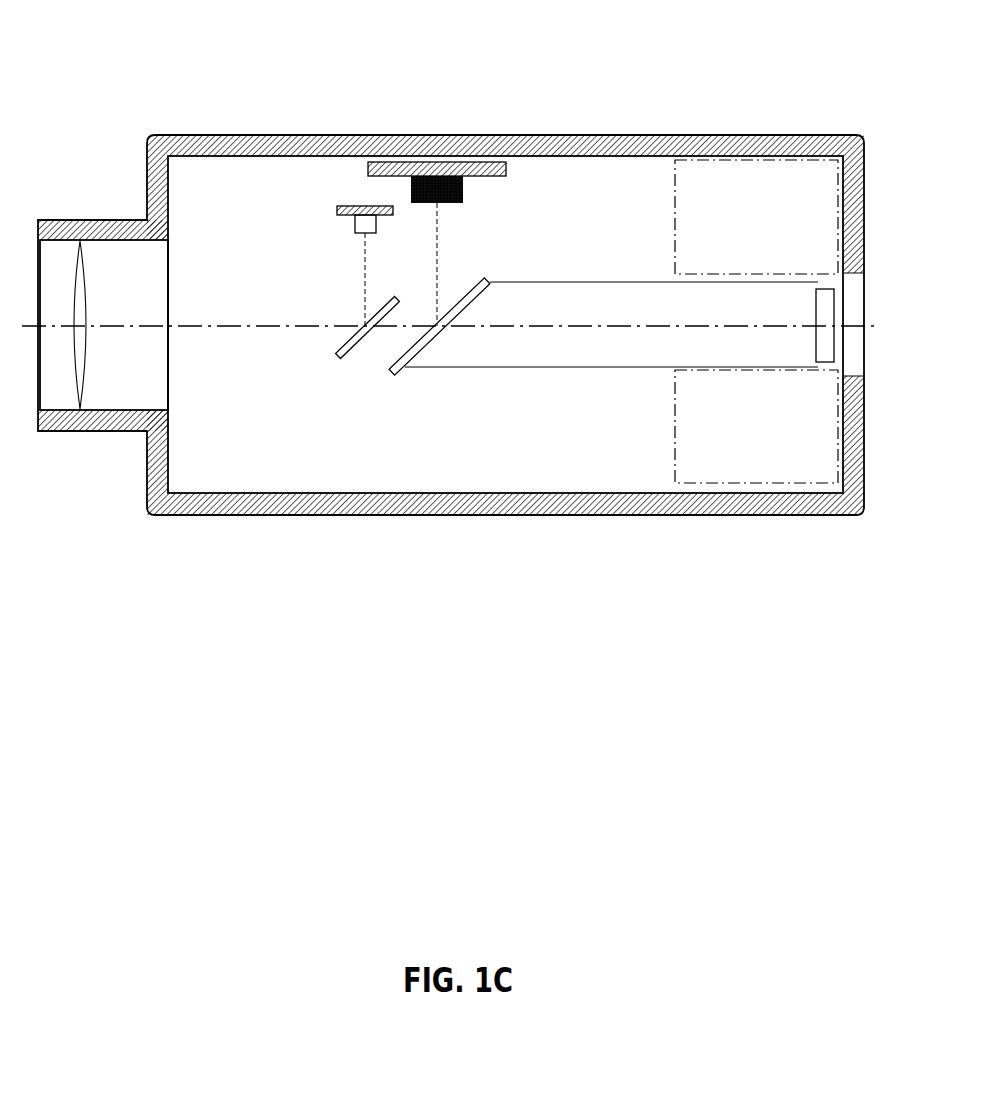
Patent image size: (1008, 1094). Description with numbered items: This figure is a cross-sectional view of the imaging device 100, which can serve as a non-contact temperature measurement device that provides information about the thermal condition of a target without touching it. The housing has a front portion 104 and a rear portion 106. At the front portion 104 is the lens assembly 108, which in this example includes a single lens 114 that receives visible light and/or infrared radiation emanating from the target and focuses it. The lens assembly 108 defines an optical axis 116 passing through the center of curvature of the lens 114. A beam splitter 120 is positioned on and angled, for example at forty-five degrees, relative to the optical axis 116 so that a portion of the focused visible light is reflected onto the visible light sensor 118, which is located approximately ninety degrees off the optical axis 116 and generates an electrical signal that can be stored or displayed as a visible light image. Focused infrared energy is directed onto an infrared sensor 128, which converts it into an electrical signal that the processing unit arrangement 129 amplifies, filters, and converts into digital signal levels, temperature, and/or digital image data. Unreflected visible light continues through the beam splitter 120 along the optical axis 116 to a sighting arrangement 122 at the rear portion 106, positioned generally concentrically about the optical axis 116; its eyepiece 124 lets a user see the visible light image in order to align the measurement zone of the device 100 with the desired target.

The imaging device 100 is at (549, 81).
The front portion 104 is at (227, 128).
The rear portion 106 is at (699, 127).
The lens assembly 108 is at (109, 436).
The lens 114 is at (70, 298).
The optical axis 116 is at (261, 325).
The visible light sensor 118 is at (437, 190).
The beam splitter 120 is at (346, 358).
The sighting arrangement 122 is at (690, 337).
The eyepiece 124 is at (858, 272).
The infrared sensor 128 is at (356, 205).
The processing unit arrangement 129 is at (783, 178).